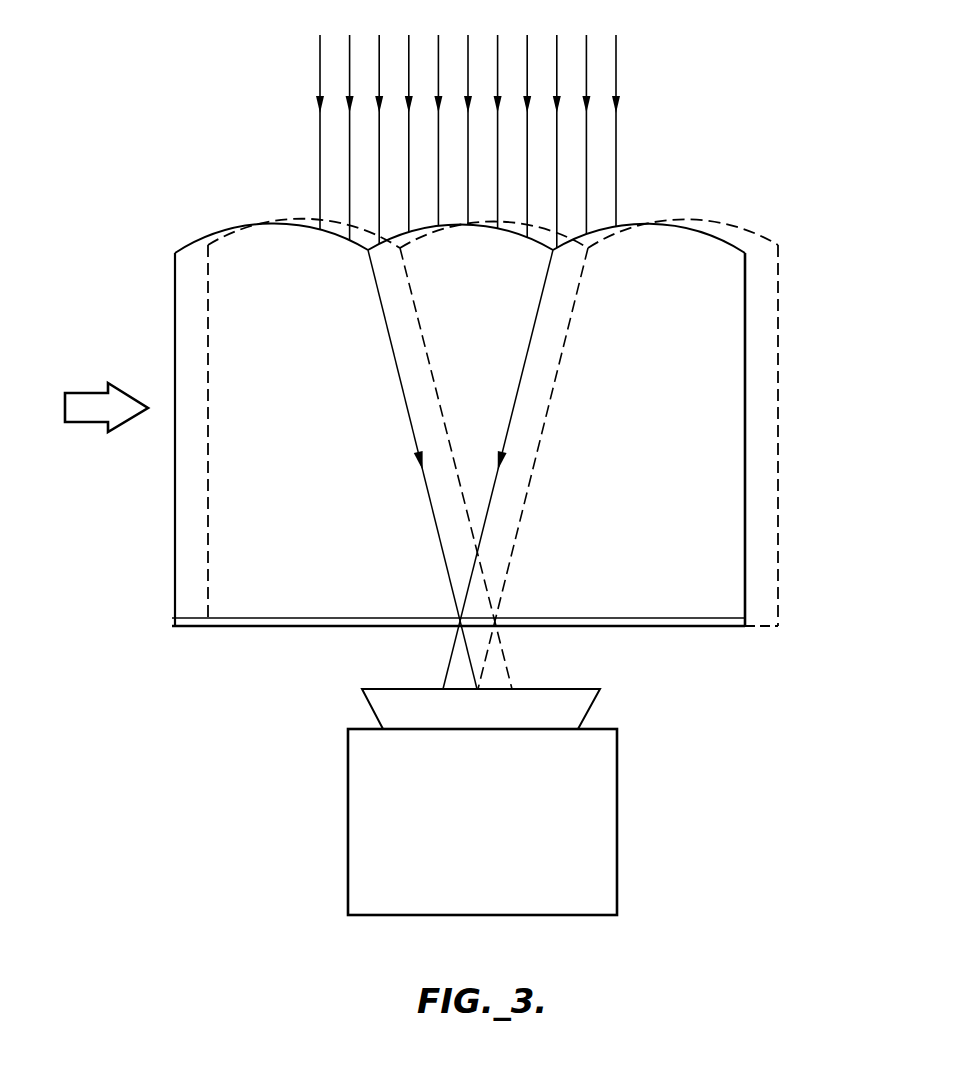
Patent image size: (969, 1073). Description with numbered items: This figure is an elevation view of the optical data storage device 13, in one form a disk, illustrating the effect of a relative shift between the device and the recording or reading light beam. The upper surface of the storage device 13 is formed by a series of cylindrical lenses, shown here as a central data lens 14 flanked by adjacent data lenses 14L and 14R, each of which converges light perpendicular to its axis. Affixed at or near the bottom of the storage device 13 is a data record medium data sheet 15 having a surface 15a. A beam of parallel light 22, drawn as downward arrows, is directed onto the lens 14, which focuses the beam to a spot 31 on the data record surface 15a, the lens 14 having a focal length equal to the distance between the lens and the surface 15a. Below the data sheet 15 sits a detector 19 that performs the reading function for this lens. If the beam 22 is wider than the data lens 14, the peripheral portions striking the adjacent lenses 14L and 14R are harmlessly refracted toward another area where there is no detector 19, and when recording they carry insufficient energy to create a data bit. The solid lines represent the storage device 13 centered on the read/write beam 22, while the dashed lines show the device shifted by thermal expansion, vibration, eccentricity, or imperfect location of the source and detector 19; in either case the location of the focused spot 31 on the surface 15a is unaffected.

The optical data storage device 13 is at (745, 393).
The cylindrical lens 14 is at (513, 228).
The adjacent data lens 14L is at (232, 228).
The adjacent data lens 14R is at (672, 218).
The data record medium data sheet 15 is at (745, 622).
The data record surface 15a is at (700, 619).
The detector 19 is at (598, 797).
The beam of parallel light 22 is at (527, 145).
The focused spot 31 is at (458, 618).